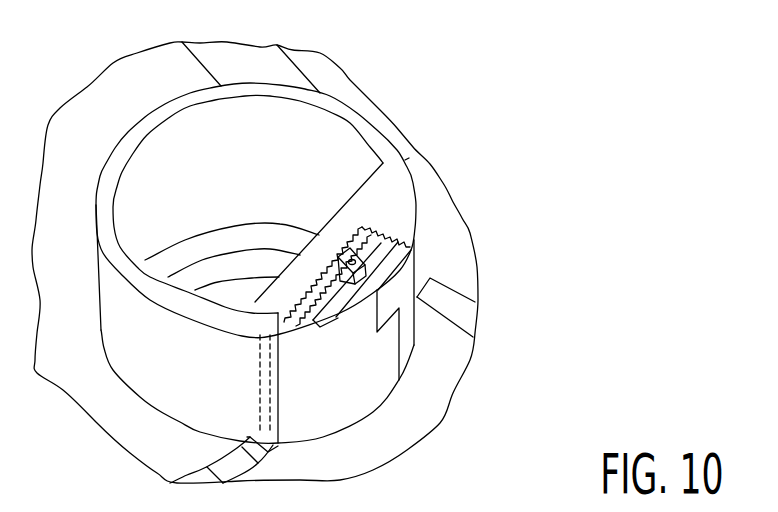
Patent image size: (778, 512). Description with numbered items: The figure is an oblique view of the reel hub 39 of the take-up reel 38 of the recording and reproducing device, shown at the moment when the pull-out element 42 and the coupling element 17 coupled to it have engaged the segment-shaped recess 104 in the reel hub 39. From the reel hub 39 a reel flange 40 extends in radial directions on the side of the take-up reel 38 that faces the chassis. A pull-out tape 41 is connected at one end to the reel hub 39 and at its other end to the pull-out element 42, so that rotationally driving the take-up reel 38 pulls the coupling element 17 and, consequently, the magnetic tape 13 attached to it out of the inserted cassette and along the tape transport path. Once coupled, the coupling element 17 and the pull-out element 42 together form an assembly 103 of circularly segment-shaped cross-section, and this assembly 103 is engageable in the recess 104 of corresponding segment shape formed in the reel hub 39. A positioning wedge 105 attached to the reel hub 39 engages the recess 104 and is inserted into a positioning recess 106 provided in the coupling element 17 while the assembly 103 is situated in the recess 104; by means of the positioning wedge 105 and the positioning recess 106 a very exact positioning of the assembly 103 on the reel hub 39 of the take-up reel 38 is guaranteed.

The magnetic tape 13 is at (213, 62).
The coupling element 17 is at (427, 254).
The take-up reel 38 is at (446, 94).
The reel hub 39 is at (414, 158).
The reel flange 40 is at (340, 82).
The pull-out tape 41 is at (274, 442).
The pull-out element 42 is at (331, 438).
The assembly 103 is at (406, 384).
The recess 104 is at (257, 378).
The positioning wedge 105 is at (355, 268).
The positioning recess 106 is at (350, 284).